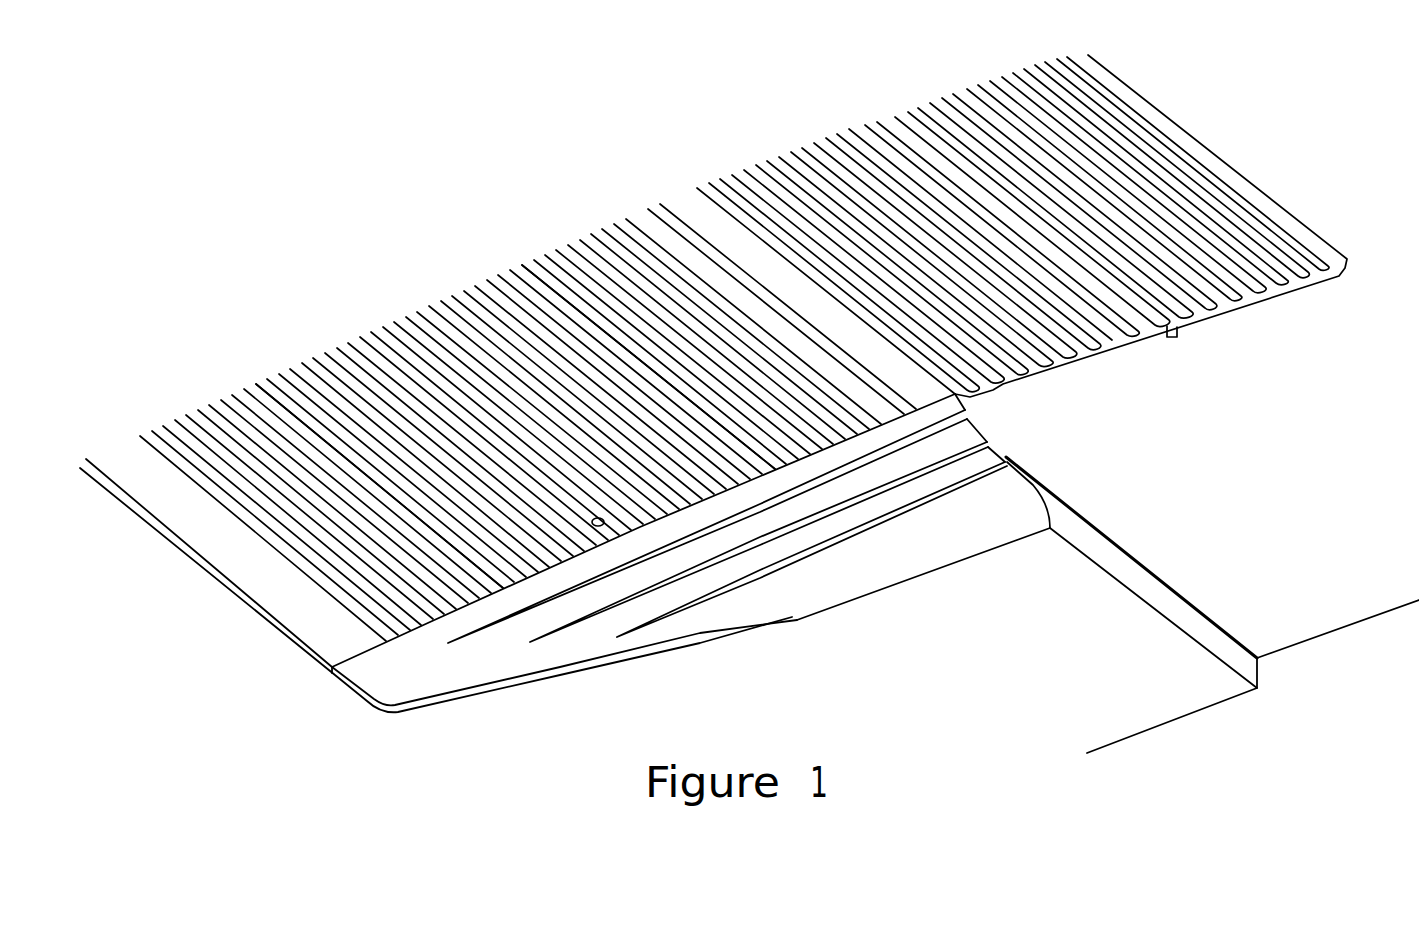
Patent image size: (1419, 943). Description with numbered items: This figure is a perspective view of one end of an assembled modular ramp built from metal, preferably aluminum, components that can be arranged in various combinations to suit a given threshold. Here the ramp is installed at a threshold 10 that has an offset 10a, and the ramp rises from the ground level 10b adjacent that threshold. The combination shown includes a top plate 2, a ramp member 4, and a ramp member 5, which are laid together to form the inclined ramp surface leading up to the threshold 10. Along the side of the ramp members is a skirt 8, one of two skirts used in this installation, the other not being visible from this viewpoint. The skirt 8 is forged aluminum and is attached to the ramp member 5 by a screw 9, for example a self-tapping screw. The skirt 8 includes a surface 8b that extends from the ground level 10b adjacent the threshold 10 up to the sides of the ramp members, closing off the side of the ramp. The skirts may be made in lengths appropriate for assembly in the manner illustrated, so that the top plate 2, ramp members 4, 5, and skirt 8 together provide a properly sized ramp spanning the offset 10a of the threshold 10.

The top plate 2 is at (1033, 82).
The ramp member 4 is at (522, 270).
The ramp member 5 is at (257, 392).
The skirt 8 is at (812, 628).
The surface 8b is at (865, 580).
The screw 9 is at (603, 525).
The threshold 10 is at (1212, 608).
The offset 10a is at (1172, 603).
The ground level 10b is at (1187, 700).